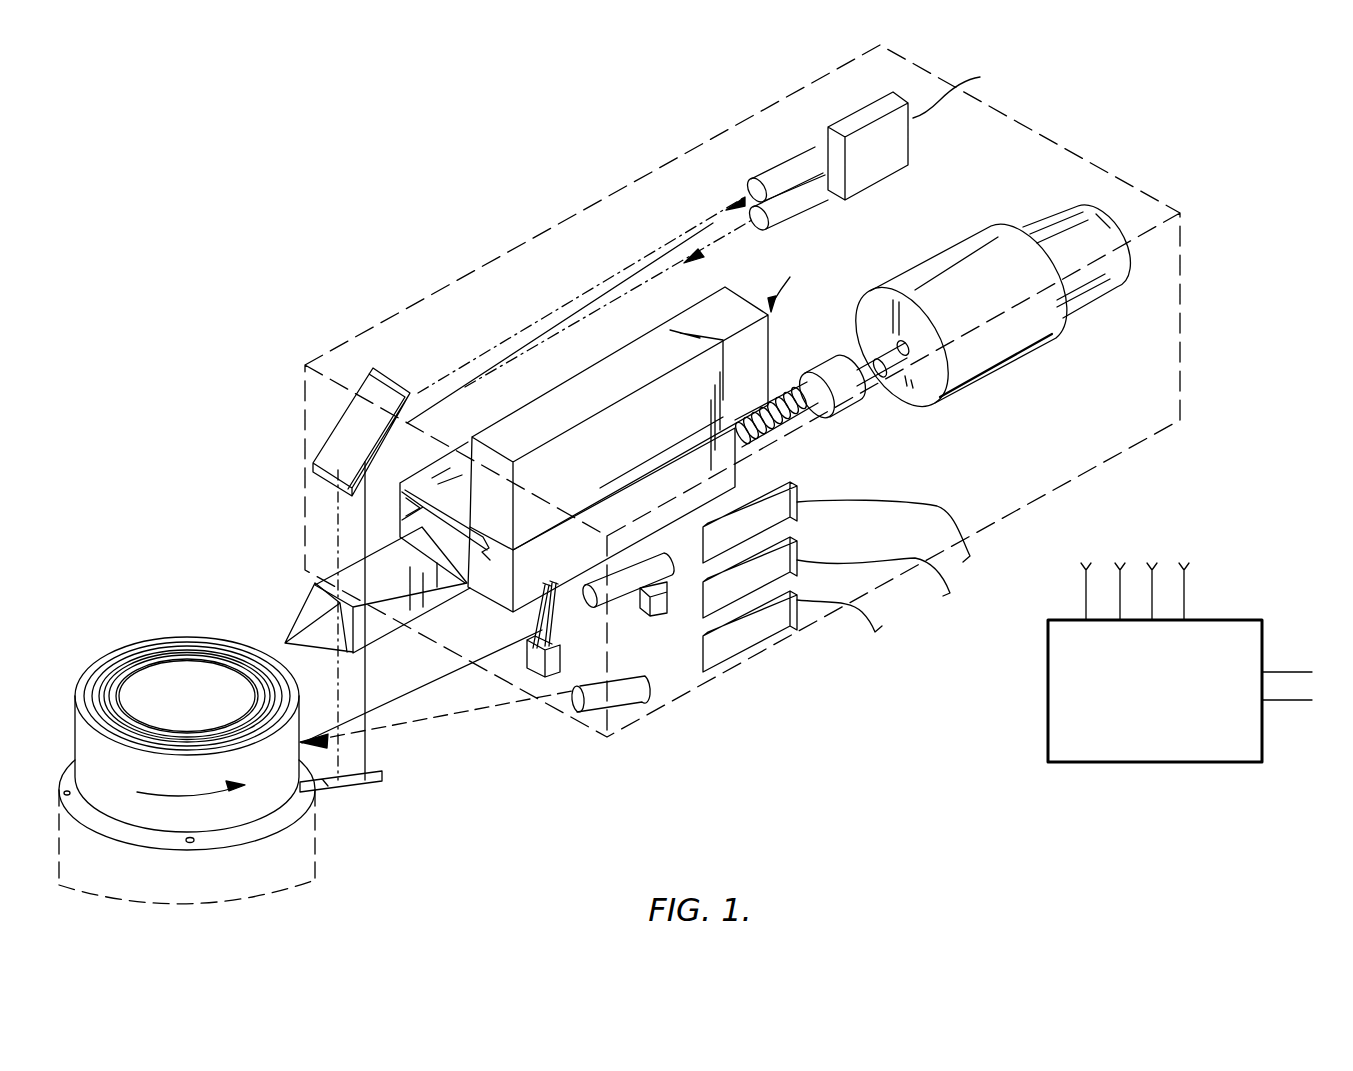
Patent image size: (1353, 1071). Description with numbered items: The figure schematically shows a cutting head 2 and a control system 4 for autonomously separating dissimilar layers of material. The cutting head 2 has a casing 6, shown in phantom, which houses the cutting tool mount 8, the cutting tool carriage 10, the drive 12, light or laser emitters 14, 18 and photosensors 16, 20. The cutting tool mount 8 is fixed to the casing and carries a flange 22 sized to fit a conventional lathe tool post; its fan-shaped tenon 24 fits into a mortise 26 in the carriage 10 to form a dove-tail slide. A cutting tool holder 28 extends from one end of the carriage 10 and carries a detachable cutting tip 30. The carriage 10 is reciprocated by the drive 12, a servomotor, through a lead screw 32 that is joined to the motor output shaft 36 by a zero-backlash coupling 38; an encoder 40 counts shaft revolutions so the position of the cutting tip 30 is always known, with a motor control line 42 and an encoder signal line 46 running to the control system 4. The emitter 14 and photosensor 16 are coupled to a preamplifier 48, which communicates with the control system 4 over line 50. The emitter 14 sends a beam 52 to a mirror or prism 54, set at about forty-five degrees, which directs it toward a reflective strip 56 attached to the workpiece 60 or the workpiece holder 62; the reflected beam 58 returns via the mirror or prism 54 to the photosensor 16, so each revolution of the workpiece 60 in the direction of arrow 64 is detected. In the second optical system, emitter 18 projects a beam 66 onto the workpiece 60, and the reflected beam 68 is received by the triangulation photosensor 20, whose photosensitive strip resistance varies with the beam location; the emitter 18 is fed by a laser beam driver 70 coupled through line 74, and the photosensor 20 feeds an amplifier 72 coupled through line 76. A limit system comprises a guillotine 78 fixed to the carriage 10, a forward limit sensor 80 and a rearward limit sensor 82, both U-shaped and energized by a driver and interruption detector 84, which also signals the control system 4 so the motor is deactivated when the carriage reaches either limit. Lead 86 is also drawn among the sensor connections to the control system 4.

The cutting head 2 is at (706, 473).
The control system 4 is at (1245, 763).
The casing 6 is at (360, 335).
The cutting tool mount 8 is at (794, 265).
The cutting tool carriage 10 is at (737, 472).
The drive 12 is at (950, 243).
The light or laser emitter 14 is at (788, 160).
The photosensor 16 is at (805, 198).
The light or laser emitter 18 is at (578, 718).
The triangulation photosensor 20 is at (648, 560).
The flange 22 is at (630, 413).
The fan-shaped tenon 24 is at (403, 517).
The mortise 26 is at (468, 590).
The cutting tool holder 28 is at (393, 548).
The cutting tip 30 is at (297, 633).
The lead screw 32 is at (800, 385).
The output shaft 36 is at (890, 385).
The zero-backlash coupling 38 is at (845, 398).
The encoder 40 is at (1107, 272).
The motor control line 42 is at (1040, 224).
The encoder signal line 46 is at (1104, 220).
The preamplifier 48 is at (875, 110).
The line 50 is at (980, 82).
The beam 52 is at (587, 290).
The mirror or prism 54 is at (325, 445).
The reflective strip 56 is at (383, 781).
The reflected beam 58 is at (518, 355).
The workpiece 60 is at (187, 734).
The workpiece holder 62 is at (187, 832).
The arrow 64 is at (170, 793).
The beam 66 is at (462, 720).
The reflected beam 68 is at (432, 684).
The laser beam driver 70 is at (788, 620).
The amplifier 72 is at (782, 513).
The line 74 is at (868, 608).
The line 76 is at (953, 502).
The guillotine 78 is at (549, 580).
The forward limit sensor 80 is at (538, 685).
The rearward limit sensor 82 is at (655, 615).
The driver and interruption detector 84 is at (783, 568).
The lead 86 is at (900, 556).